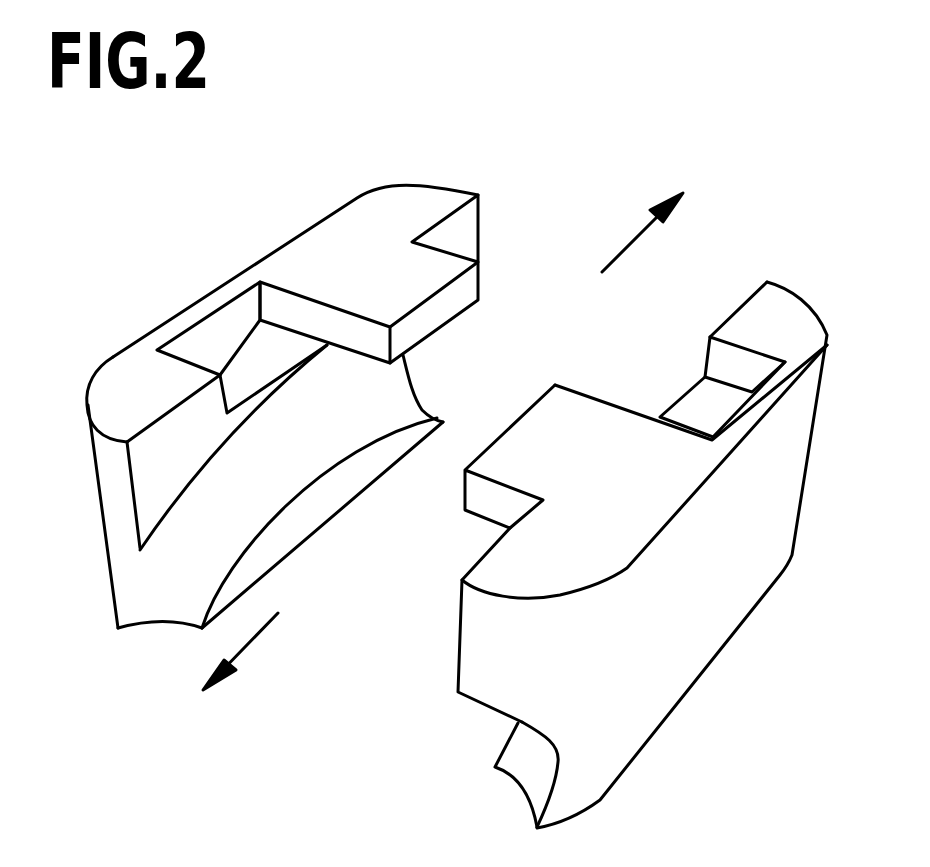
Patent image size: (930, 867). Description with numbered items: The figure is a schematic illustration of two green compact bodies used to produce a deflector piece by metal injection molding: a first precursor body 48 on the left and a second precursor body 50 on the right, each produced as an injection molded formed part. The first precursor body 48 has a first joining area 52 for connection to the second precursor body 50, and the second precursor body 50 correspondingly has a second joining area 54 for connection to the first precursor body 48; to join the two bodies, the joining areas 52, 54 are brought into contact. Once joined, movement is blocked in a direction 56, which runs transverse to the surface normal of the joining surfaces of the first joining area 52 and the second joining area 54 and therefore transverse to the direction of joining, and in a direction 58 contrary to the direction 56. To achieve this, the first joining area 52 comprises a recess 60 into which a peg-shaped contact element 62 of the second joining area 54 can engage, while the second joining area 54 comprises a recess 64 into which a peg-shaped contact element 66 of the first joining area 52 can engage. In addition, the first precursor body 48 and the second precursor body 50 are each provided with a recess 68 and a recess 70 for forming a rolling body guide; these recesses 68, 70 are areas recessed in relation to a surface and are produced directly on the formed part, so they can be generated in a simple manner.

The first precursor body 48 is at (110, 458).
The second precursor body 50 is at (747, 600).
The first joining area 52 is at (152, 483).
The second joining area 54 is at (744, 308).
The direction 56 is at (622, 253).
The direction 58 is at (260, 633).
The recess 60 is at (248, 360).
The peg-shaped contact element 62 is at (570, 398).
The recess 64 is at (687, 405).
The peg-shaped contact element 66 is at (412, 297).
The recess 68 is at (283, 477).
The recess 70 is at (518, 755).